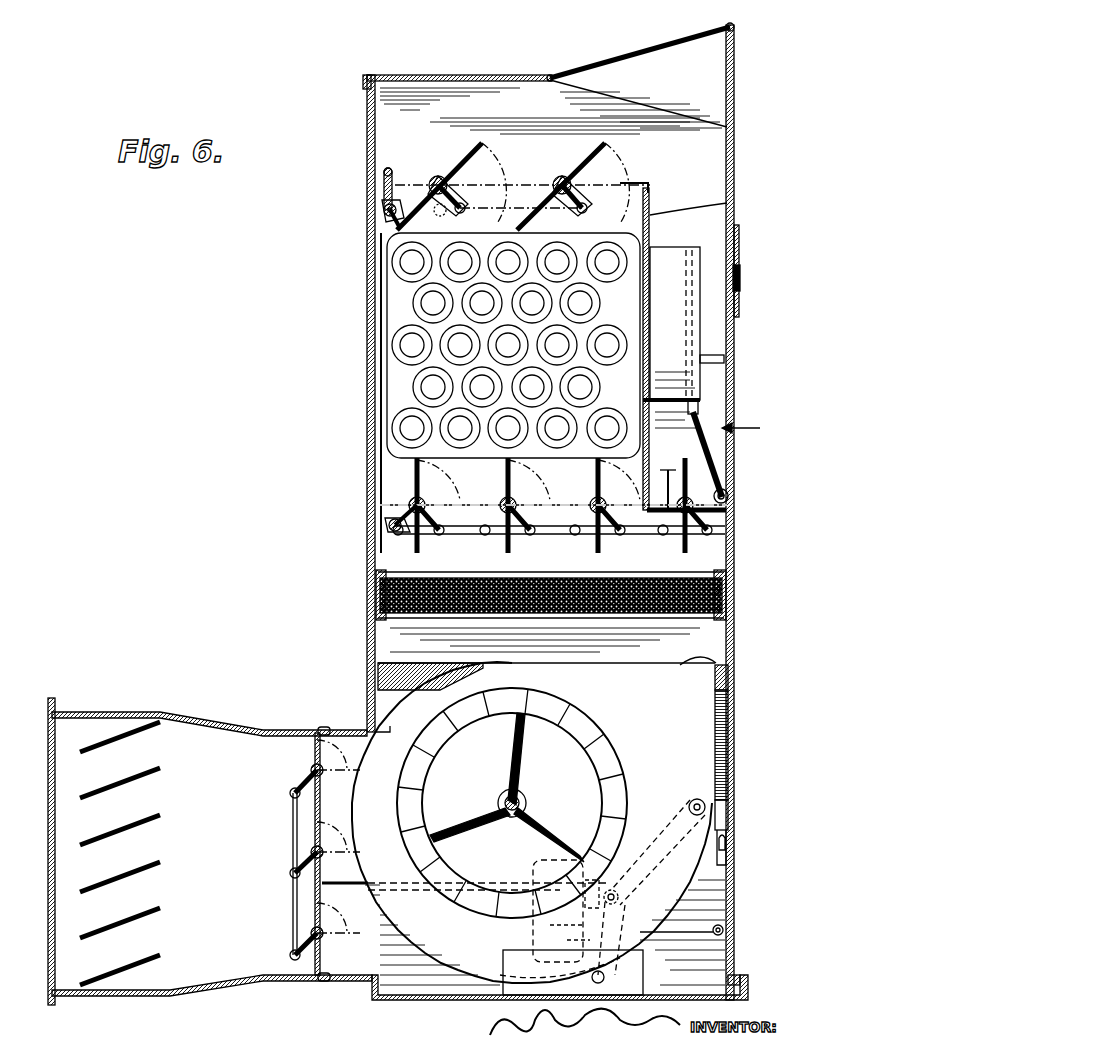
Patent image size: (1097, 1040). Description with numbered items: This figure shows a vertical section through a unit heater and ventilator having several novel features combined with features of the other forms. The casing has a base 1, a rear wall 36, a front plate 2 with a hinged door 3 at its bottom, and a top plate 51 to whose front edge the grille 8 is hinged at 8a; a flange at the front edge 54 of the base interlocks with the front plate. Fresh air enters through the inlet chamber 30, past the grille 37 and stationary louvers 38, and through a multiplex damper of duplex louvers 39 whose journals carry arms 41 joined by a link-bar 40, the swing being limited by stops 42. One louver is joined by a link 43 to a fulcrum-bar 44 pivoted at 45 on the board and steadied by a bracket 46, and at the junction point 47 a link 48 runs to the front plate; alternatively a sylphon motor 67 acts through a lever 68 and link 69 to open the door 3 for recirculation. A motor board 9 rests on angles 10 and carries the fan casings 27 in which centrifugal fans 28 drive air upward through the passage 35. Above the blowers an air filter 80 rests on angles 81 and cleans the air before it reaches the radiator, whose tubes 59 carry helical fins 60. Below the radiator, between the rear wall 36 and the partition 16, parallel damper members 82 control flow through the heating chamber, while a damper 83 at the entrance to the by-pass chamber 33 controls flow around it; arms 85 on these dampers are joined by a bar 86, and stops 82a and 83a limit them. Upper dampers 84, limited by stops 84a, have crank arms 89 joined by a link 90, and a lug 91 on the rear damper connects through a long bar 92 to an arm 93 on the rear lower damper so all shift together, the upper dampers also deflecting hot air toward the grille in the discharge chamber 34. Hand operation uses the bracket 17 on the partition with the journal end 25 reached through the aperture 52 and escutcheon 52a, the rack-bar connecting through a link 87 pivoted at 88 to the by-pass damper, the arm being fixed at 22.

The base 1 is at (485, 1000).
The front plate 2 is at (735, 184).
The hinged door 3 is at (734, 816).
The hinged grille 8 is at (648, 50).
The grille hinge 8a is at (550, 75).
The motor board 9 is at (406, 663).
The angles 10 is at (378, 676).
The partition 16 is at (735, 212).
The angular bracket 17 is at (656, 250).
The fixed point of curved arm 22 is at (700, 404).
The journal end 25 is at (712, 358).
The fan casings 27 is at (710, 727).
The centrifugal fans 28 is at (598, 738).
The inlet chamber 30 is at (218, 736).
The by-pass chamber 33 is at (754, 429).
The mixing and discharge chamber 34 is at (395, 134).
The passage 35 is at (728, 662).
The rear wall 36 is at (381, 443).
The grille 37 is at (48, 748).
The stationary louvers 38 is at (145, 790).
The duplex louvers 39 is at (315, 748).
The link-bar 40 is at (293, 815).
The arms 41 is at (290, 782).
The stationary stops 42 is at (320, 730).
The link 43 is at (372, 900).
The fulcrum-bar 44 is at (618, 902).
The fulcrum pivot 45 is at (596, 985).
The bracket 46 is at (628, 998).
The junction point 47 is at (612, 888).
The link 48 is at (690, 805).
The top plate 51 is at (475, 75).
The aperture 52 is at (741, 277).
The escutcheon 52a is at (740, 245).
The front edge of base 54 is at (738, 978).
The radiator tubes 59 is at (605, 340).
The fins 60 is at (395, 388).
The sylphon motor 67 is at (535, 935).
The lever 68 is at (580, 950).
The link 69 is at (706, 926).
The air filter 80 is at (380, 598).
The angles 81 is at (728, 615).
The damper members 82 is at (412, 470).
The stop 82a is at (665, 505).
The by-pass damper 83 is at (730, 516).
The stop 83a is at (678, 462).
The upper dampers 84 is at (595, 150).
The stops 84a is at (640, 185).
The arms 85 is at (490, 540).
The bar or link 86 is at (572, 540).
The link 87 is at (716, 458).
The pivot 88 is at (729, 494).
The crank arm 89 is at (465, 178).
The link 90 is at (600, 170).
The lug 91 is at (388, 222).
The long bar or link 92 is at (387, 298).
The arm 93 is at (385, 522).